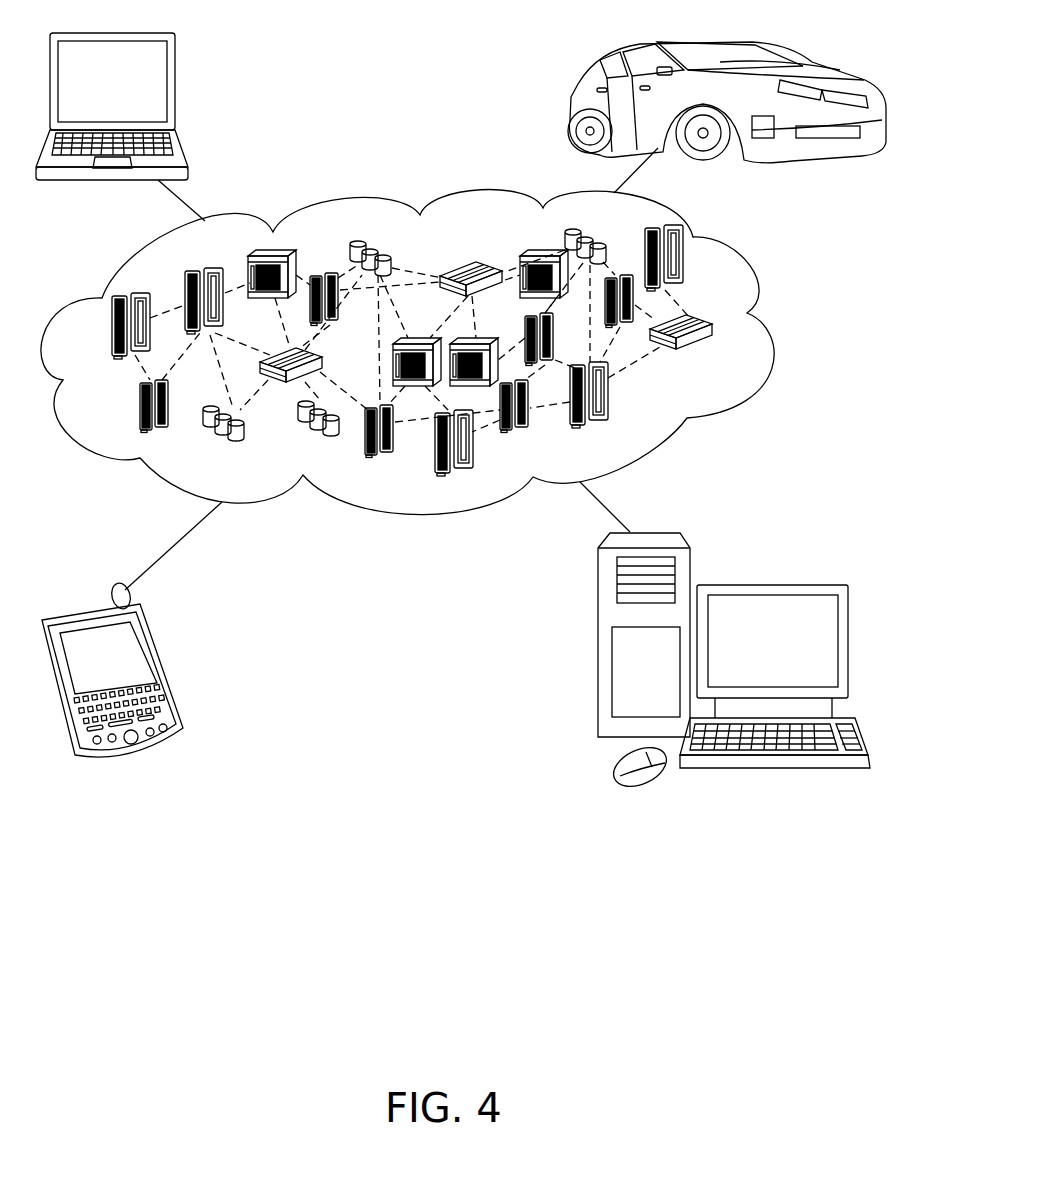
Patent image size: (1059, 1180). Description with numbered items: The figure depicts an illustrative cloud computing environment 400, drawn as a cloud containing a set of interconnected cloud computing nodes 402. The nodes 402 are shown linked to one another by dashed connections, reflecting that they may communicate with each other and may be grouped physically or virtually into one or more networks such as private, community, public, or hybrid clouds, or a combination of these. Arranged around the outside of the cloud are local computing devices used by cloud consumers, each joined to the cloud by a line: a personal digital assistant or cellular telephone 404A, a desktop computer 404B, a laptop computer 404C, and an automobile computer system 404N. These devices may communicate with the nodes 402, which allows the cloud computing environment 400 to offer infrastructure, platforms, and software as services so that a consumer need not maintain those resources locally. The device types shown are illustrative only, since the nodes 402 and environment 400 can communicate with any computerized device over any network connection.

The cloud computing environment 400 is at (723, 325).
The cloud computing nodes 402 is at (726, 358).
The personal digital assistant or cellular telephone 404A is at (157, 641).
The desktop computer 404B is at (760, 585).
The laptop computer 404C is at (175, 62).
The automobile computer system 404N is at (574, 104).